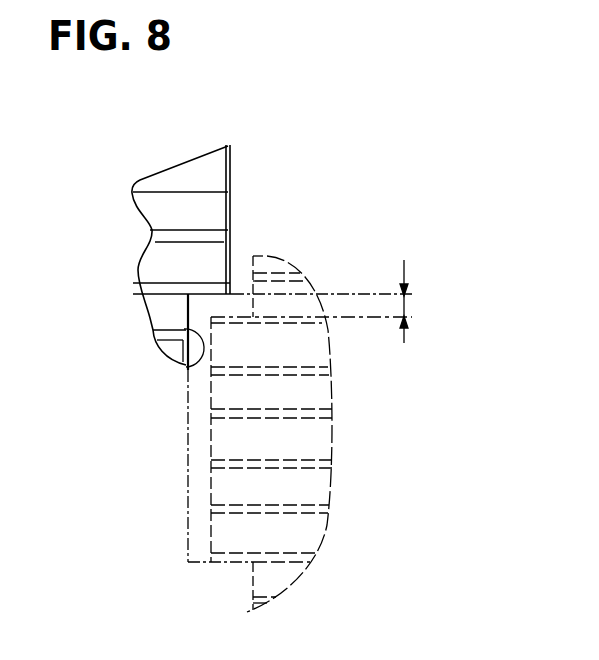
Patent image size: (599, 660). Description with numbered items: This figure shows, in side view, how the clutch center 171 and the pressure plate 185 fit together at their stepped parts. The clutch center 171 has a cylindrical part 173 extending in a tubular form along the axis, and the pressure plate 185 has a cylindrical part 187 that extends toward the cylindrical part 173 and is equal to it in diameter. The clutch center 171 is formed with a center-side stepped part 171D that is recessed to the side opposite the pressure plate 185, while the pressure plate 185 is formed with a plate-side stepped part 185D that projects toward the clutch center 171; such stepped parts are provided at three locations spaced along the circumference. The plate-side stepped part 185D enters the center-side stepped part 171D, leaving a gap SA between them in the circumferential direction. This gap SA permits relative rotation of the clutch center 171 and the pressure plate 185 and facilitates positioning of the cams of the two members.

The clutch center 171 is at (232, 152).
The cylindrical part 173 is at (162, 215).
The center-side stepped part 171D is at (186, 367).
The pressure plate 185 is at (209, 513).
The plate-side stepped part 185D is at (211, 440).
The cylindrical part 187 is at (308, 488).
The gap SA is at (422, 301).